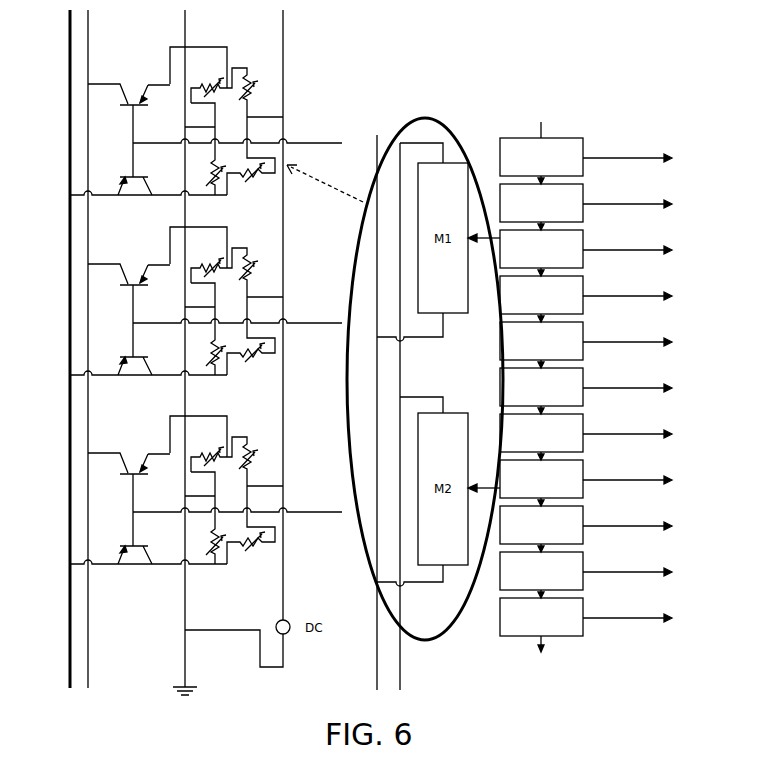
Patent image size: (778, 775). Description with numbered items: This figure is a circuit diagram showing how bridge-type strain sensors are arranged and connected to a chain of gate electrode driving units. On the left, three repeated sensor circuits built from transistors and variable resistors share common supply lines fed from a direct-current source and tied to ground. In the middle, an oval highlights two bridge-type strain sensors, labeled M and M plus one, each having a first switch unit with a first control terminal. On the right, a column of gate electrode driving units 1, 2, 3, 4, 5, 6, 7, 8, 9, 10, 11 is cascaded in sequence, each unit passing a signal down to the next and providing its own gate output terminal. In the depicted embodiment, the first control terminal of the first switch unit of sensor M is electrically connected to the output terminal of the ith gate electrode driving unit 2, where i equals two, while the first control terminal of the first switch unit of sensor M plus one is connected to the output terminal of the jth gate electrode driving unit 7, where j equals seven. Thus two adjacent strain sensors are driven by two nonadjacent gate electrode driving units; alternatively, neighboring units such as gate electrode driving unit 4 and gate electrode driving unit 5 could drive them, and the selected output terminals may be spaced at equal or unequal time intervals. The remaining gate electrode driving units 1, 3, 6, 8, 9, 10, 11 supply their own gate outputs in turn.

The gate electrode driving unit 1 is at (586, 161).
The gate electrode driving unit 2 is at (586, 207).
The gate electrode driving unit 3 is at (586, 253).
The gate electrode driving unit 4 is at (586, 299).
The gate electrode driving unit 5 is at (586, 345).
The gate electrode driving unit 6 is at (586, 391).
The gate electrode driving unit 7 is at (586, 437).
The gate electrode driving unit 8 is at (586, 483).
The gate electrode driving unit 9 is at (586, 529).
The gate electrode driving unit 10 is at (586, 575).
The gate electrode driving unit 11 is at (586, 625).